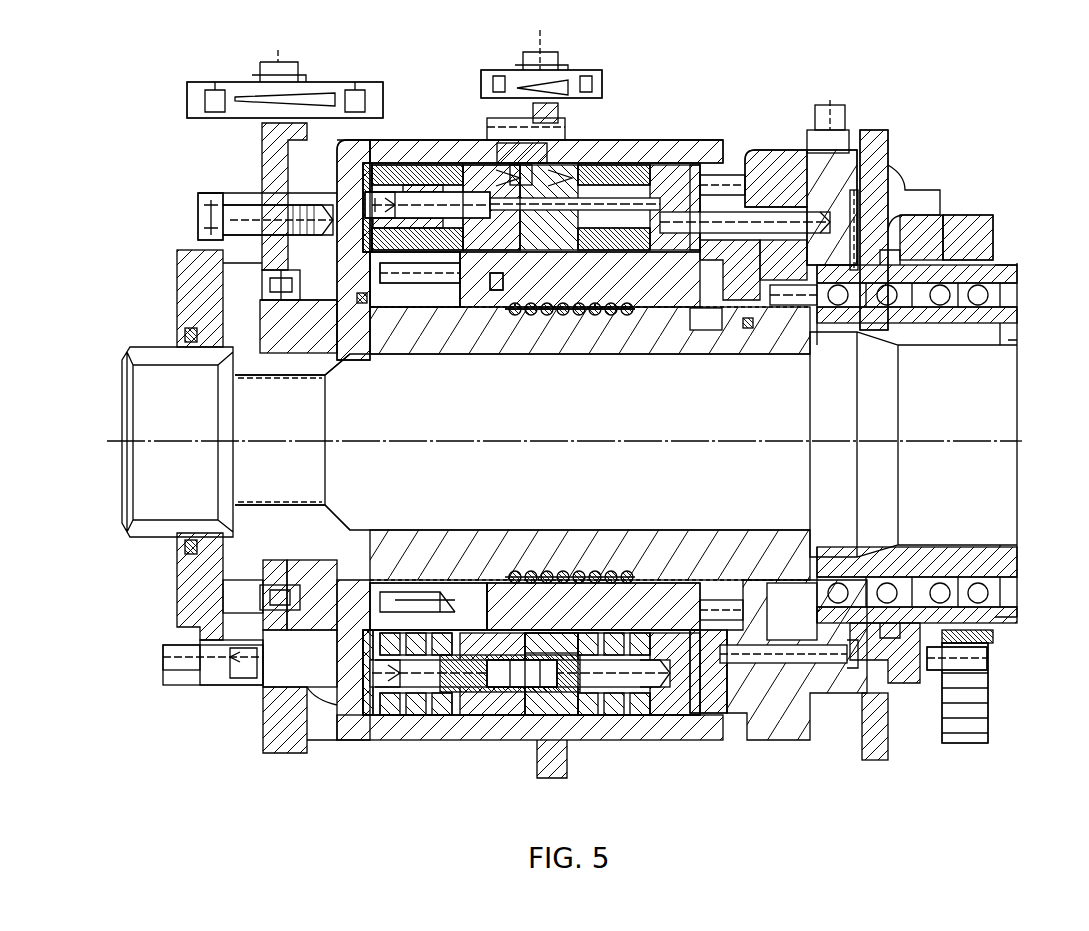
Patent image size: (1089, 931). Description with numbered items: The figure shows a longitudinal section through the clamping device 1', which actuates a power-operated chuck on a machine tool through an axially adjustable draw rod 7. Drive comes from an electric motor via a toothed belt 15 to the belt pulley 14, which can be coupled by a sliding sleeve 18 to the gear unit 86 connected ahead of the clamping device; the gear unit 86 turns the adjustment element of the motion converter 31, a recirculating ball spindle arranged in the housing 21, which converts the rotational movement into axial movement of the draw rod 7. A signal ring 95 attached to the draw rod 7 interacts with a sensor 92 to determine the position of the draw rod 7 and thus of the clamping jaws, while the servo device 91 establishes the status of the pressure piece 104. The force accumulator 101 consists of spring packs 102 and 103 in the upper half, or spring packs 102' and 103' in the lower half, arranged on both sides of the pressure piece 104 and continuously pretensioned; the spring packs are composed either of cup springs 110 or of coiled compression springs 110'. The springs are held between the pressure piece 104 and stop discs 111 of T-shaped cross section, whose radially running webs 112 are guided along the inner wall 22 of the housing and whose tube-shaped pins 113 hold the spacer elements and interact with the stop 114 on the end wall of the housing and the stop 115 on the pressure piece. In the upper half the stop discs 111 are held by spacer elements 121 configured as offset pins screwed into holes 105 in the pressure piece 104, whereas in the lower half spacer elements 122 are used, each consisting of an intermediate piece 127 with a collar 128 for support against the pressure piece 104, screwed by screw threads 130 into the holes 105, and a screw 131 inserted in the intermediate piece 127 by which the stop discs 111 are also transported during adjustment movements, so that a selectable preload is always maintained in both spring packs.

The clamping device 1' is at (537, 83).
The draw rod 7 is at (157, 343).
The belt pulley 14 is at (1000, 243).
The toothed belt 15 is at (990, 698).
The sliding sleeve 18 is at (890, 160).
The housing 21 is at (605, 138).
The inner wall 22 is at (455, 170).
The motion converter 31 is at (582, 320).
The gear unit 86 is at (775, 122).
The servo device 91 is at (604, 90).
The sensor 92 is at (185, 98).
The signal ring 95 is at (262, 135).
The force accumulator 101 is at (420, 87).
The spring pack 102 is at (417, 169).
The spring pack 102' is at (411, 707).
The spring pack 103 is at (630, 170).
The spring pack 103' is at (645, 742).
The pressure piece 104 is at (523, 720).
The holes 105 is at (516, 240).
The cup springs 110 is at (270, 190).
The coiled compression springs 110' is at (263, 706).
The stop discs 111 is at (370, 163).
The webs 112 is at (368, 700).
The tube-shaped pins 113 is at (398, 265).
The stop 114 is at (388, 295).
The stop 115 is at (473, 280).
The spacer elements 121 is at (447, 258).
The spacer elements 122 is at (625, 575).
The intermediate piece 127 is at (608, 680).
The collar 128 is at (597, 655).
The screw threads 130 is at (560, 655).
The screws 131 is at (680, 683).